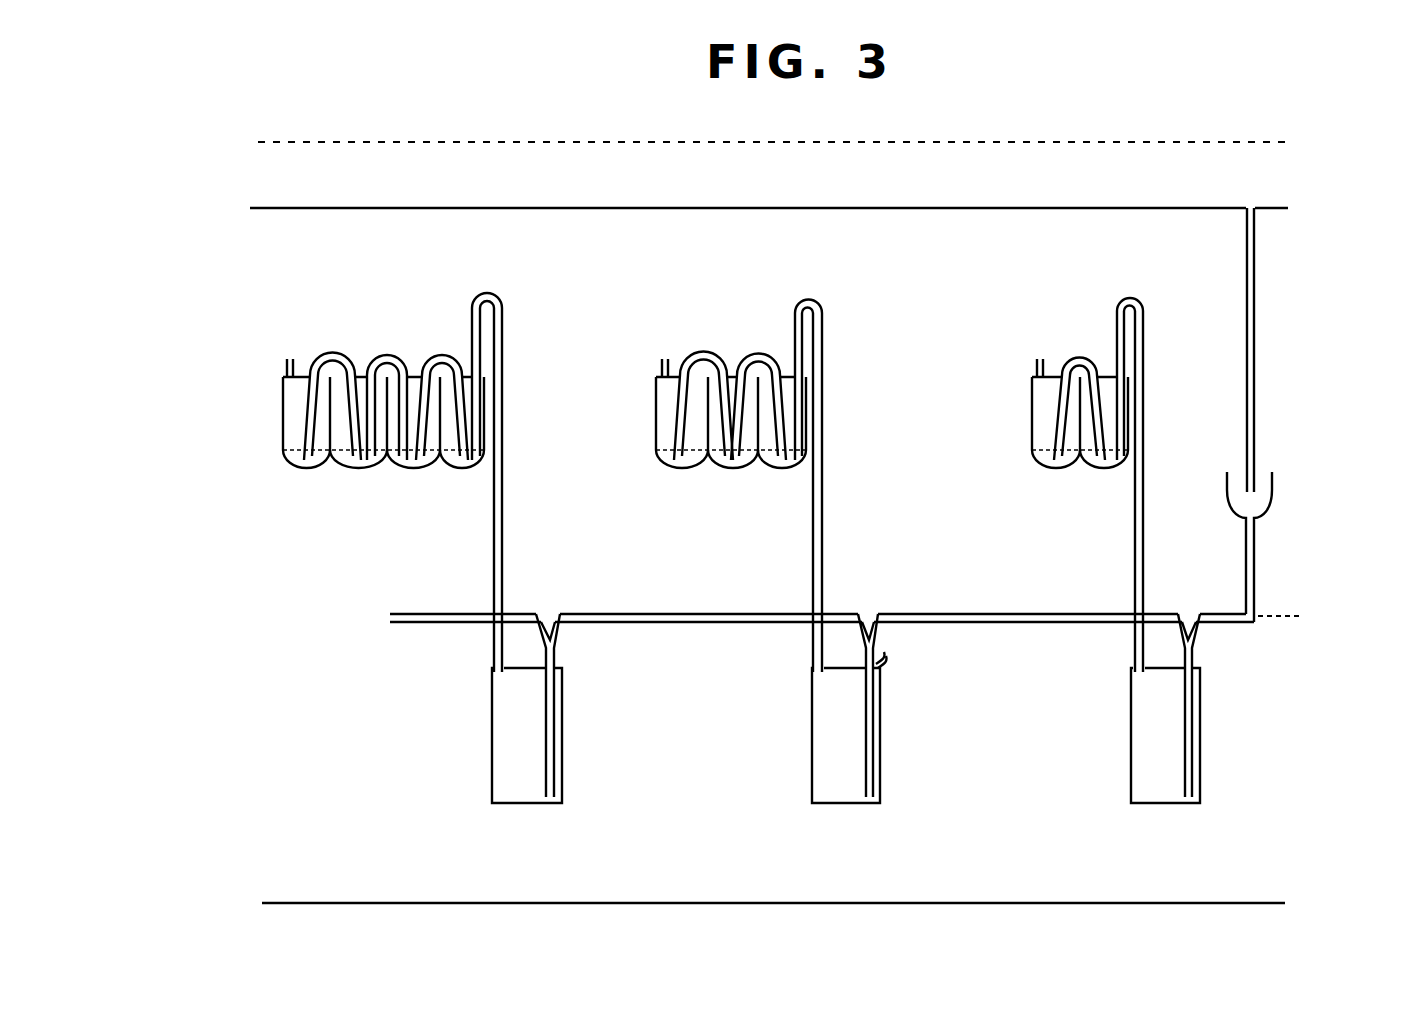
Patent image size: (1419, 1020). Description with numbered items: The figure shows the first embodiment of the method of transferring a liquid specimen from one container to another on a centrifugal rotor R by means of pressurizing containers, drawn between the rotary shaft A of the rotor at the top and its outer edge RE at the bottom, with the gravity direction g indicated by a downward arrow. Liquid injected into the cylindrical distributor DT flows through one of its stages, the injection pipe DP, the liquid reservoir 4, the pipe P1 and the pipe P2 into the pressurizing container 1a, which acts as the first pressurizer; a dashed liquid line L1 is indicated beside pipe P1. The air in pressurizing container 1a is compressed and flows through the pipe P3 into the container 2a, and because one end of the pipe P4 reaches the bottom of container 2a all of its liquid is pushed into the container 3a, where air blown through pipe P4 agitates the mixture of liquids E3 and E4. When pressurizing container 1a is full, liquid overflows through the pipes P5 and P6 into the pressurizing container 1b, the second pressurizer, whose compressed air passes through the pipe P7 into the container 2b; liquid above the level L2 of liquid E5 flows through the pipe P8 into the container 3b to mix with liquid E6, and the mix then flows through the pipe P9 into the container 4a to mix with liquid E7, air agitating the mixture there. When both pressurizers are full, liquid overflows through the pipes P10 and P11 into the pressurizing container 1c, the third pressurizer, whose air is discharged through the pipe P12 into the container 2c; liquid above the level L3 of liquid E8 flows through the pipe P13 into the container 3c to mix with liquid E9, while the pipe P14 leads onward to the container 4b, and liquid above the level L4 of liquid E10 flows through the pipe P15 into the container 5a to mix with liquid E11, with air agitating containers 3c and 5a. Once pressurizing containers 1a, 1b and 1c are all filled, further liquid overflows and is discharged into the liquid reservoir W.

The rotary shaft A is at (1303, 142).
The distributor DT is at (1293, 208).
The injection pipe DP is at (1257, 341).
The outer edge RE is at (1288, 903).
The liquid reservoir 4 is at (1276, 496).
The gravity direction g is at (200, 730).
The liquid reservoir W is at (384, 628).
The centrifugal rotor R is at (952, 495).
The liquid line 1 L1 is at (1290, 625).
The level L2 is at (758, 470).
The level L3 is at (437, 470).
The level L4 is at (332, 470).
The pipe P1 is at (1240, 625).
The pipe P2 is at (1194, 750).
The pipe P3 is at (1128, 296).
The pipe P4 is at (1078, 345).
The pipe P5 is at (924, 625).
The pipe P6 is at (876, 750).
The pipe P7 is at (807, 298).
The pipe P8 is at (760, 348).
The pipe P9 is at (705, 348).
The pipe P10 is at (606, 625).
The pipe P11 is at (555, 750).
The pipe P12 is at (487, 291).
The pipe P13 is at (441, 348).
The pressure point 14 P14 is at (388, 348).
The pipe P15 is at (333, 348).
The liquid E3 is at (1118, 450).
The liquid E4 is at (1040, 450).
The liquid E5 is at (803, 445).
The liquid E6 is at (750, 447).
The liquid E7 is at (660, 450).
The liquid E8 is at (488, 443).
The liquid E9 is at (430, 447).
The liquid E10 is at (335, 447).
The liquid E11 is at (287, 453).
The pressurizing container 1a is at (1163, 806).
The pressurizing container 1b is at (850, 806).
The pressurizing container 1c is at (527, 806).
The container 2a is at (1107, 474).
The container 2b is at (783, 474).
The container 2c is at (463, 474).
The container 3a is at (1055, 474).
The container 3b is at (730, 474).
The container 3c is at (410, 474).
The container 4a is at (677, 474).
The container 4b is at (358, 474).
The container 5a is at (303, 474).